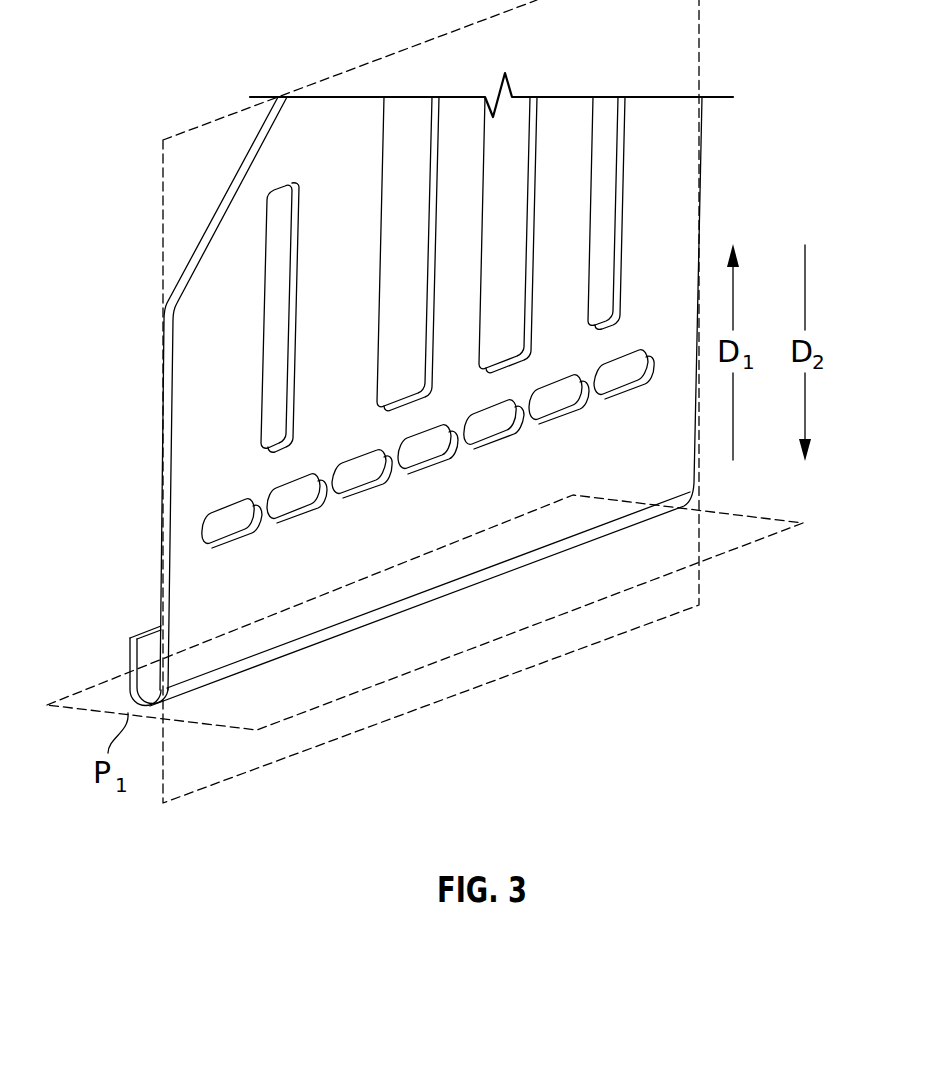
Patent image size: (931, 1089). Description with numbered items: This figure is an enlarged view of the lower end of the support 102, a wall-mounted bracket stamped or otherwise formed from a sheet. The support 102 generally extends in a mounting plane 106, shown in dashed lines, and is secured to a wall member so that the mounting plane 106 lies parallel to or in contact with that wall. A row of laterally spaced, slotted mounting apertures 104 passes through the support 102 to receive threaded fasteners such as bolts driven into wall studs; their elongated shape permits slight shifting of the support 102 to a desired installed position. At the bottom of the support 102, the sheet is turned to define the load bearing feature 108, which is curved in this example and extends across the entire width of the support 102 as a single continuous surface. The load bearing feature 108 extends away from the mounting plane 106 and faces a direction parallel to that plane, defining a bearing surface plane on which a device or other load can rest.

The support 102 is at (467, 143).
The mounting apertures 104 is at (420, 435).
The mounting plane 106 is at (252, 770).
The load bearing feature 108 is at (147, 662).